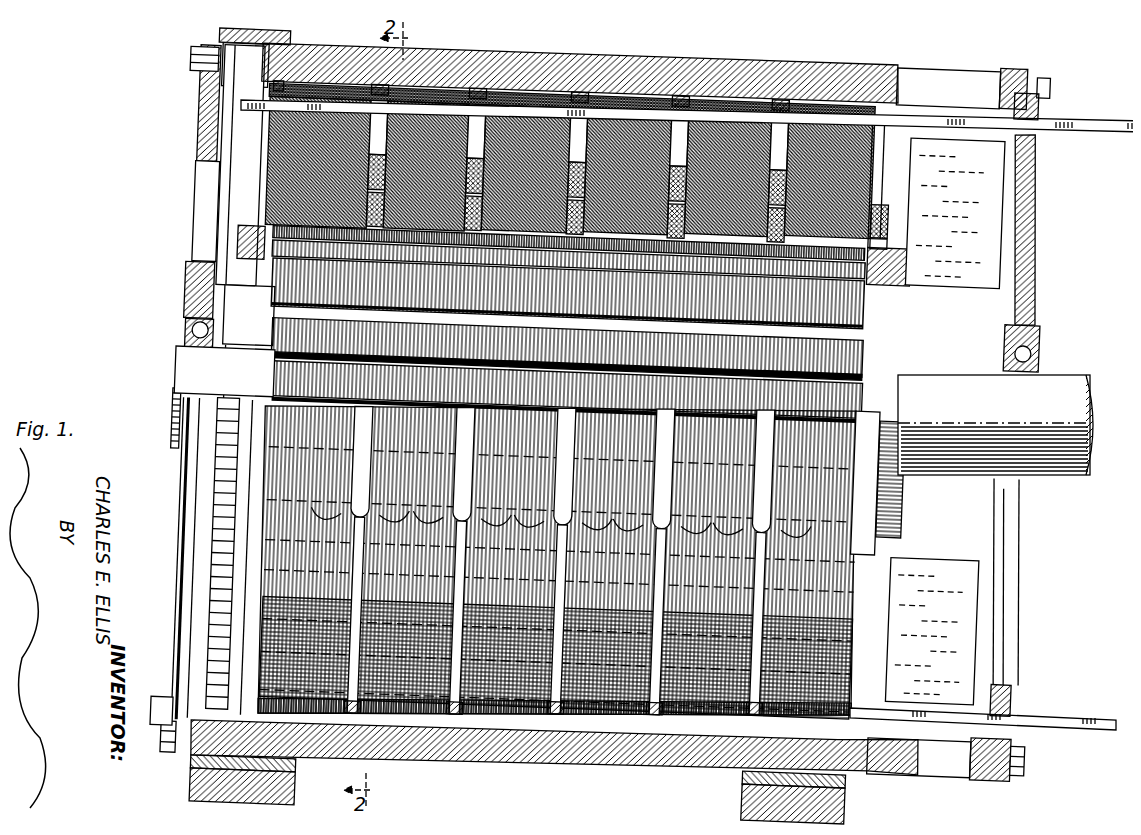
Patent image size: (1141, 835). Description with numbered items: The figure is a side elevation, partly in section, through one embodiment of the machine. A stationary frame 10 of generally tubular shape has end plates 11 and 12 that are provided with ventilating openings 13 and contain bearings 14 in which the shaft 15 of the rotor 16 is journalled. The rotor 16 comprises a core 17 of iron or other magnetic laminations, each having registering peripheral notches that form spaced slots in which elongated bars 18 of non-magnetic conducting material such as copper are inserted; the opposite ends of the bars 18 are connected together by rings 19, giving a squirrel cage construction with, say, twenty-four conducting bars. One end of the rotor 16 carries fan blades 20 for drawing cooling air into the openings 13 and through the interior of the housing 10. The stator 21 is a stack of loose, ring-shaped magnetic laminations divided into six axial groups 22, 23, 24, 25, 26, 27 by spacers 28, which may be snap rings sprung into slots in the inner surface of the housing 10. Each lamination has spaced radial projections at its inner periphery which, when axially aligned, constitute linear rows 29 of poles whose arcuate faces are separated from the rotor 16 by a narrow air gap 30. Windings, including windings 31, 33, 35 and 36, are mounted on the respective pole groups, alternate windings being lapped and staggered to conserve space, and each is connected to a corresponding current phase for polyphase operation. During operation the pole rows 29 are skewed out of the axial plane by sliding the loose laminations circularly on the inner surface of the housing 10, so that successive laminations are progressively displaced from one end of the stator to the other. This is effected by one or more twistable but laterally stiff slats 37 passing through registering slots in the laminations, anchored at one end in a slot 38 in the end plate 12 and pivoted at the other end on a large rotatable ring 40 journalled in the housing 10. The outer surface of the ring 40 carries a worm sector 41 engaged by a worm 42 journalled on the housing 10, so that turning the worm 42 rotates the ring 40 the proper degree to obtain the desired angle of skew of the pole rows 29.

The stationary frame 10 is at (560, 758).
The end plate 11 is at (193, 130).
The end plate 12 is at (1027, 290).
The ventilating openings 13 is at (200, 200).
The bearings 14 is at (185, 322).
The shaft 15 is at (183, 352).
The rotor 16 is at (250, 272).
The core 17 is at (855, 300).
The elongated bars 18 is at (855, 352).
The rings 19 is at (240, 225).
The fan blades 20 is at (965, 165).
The stator 21 is at (264, 539).
The stator pole group 22 is at (337, 78).
The stator pole group 23 is at (412, 125).
The stator pole group 24 is at (500, 130).
The stator pole group 25 is at (608, 125).
The stator pole group 26 is at (705, 125).
The stator pole group 27 is at (803, 130).
The spacers 28 is at (470, 76).
The linear rows of poles 29 is at (880, 205).
The air gap 30 is at (262, 262).
The winding 31 is at (253, 147).
The winding 33 is at (572, 150).
The winding 35 is at (772, 165).
The winding 36 is at (885, 218).
The slats 37 is at (1085, 118).
The slot 38 is at (1035, 112).
The rotatable ring 40 is at (217, 100).
The worm sector 41 is at (212, 493).
The worm 42 is at (212, 37).